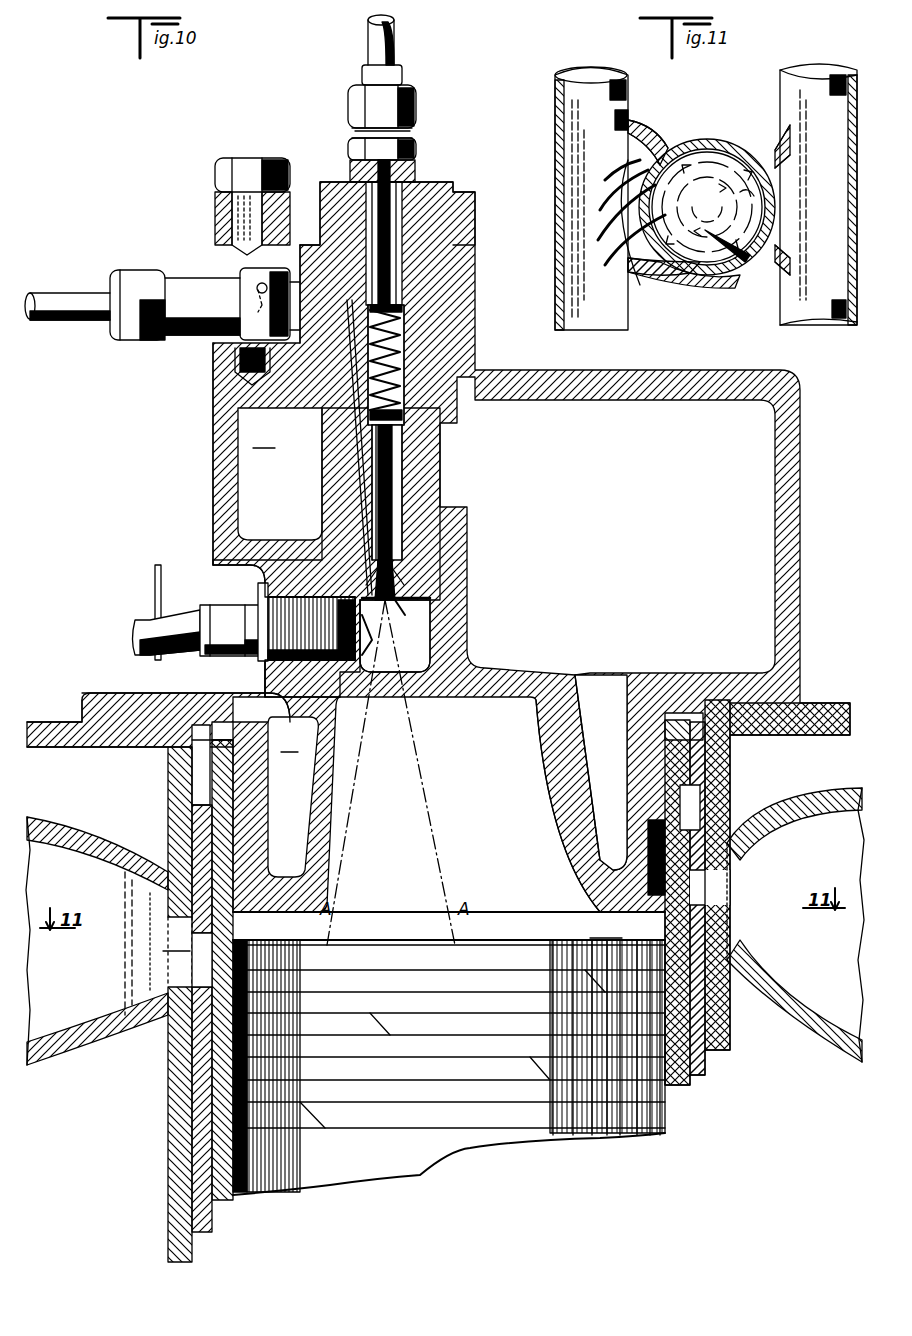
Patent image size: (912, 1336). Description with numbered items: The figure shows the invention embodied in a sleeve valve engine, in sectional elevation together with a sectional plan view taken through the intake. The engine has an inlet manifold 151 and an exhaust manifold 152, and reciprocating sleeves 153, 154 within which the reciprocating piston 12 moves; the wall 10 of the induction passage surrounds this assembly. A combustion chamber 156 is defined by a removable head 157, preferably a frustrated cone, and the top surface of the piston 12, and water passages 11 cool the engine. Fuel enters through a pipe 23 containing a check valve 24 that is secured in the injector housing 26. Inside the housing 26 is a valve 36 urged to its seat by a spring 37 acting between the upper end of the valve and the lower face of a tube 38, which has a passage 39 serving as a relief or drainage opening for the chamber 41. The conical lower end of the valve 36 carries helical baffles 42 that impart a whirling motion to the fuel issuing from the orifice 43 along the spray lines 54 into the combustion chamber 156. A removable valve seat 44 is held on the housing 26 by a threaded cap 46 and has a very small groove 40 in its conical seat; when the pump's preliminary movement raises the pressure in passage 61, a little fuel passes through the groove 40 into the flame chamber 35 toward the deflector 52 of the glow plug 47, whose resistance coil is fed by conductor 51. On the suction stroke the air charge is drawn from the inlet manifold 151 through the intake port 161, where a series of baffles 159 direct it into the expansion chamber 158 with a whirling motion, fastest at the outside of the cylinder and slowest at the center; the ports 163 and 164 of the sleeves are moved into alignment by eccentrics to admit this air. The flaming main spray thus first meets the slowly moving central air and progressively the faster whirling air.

In FIG. 10, the wall of induction passage 10 is at (195, 1255).
In FIG. 11, the wall of induction passage 10 is at (722, 280).
In FIG. 10, the water passages 11 is at (438, 633).
In FIG. 10, the reciprocating piston 12 is at (455, 1150).
In FIG. 11, the reciprocating piston 12 is at (745, 240).
In FIG. 10, the pipe 23 is at (78, 288).
In FIG. 10, the check valve 24 is at (245, 292).
In FIG. 10, the injector housing 26 is at (440, 185).
In FIG. 10, the flame chamber 35 is at (432, 634).
In FIG. 10, the valve 36 is at (406, 462).
In FIG. 10, the spring 37 is at (392, 325).
In FIG. 10, the tube 38 is at (398, 290).
In FIG. 10, the passage 39 is at (388, 265).
In FIG. 10, the groove 40 is at (360, 598).
In FIG. 10, the chamber 41 is at (400, 342).
In FIG. 10, the helical baffles 42 is at (385, 568).
In FIG. 10, the orifice 43 is at (408, 606).
In FIG. 10, the removable valve seat 44 is at (370, 596).
In FIG. 10, the threaded cap 46 is at (430, 594).
In FIG. 10, the glow plug 47 is at (198, 625).
In FIG. 10, the conductor 51 is at (152, 580).
In FIG. 10, the deflector 52 is at (370, 645).
In FIG. 10, the spray passage 54 is at (388, 700).
In FIG. 10, the passage 61 is at (345, 440).
In FIG. 10, the inlet manifold 151 is at (75, 848).
In FIG. 11, the inlet manifold 151 is at (622, 105).
In FIG. 10, the exhaust manifold 152 is at (800, 832).
In FIG. 11, the exhaust manifold 152 is at (795, 88).
In FIG. 10, the reciprocating sleeve 153 is at (212, 1222).
In FIG. 11, the reciprocating sleeve 153 is at (760, 212).
In FIG. 10, the reciprocating sleeve 154 is at (233, 1200).
In FIG. 11, the reciprocating sleeve 154 is at (754, 196).
In FIG. 10, the combustion chamber 156 is at (538, 772).
In FIG. 10, the removable head 157 is at (560, 714).
In FIG. 10, the expansion chamber 158 is at (449, 926).
In FIG. 10, the baffles 159 is at (125, 993).
In FIG. 11, the baffles 159 is at (652, 140).
In FIG. 10, the intake port 161 is at (179, 952).
In FIG. 10, the port 163 is at (262, 830).
In FIG. 10, the port 164 is at (205, 955).
In FIG. 11, the port 164 is at (662, 278).